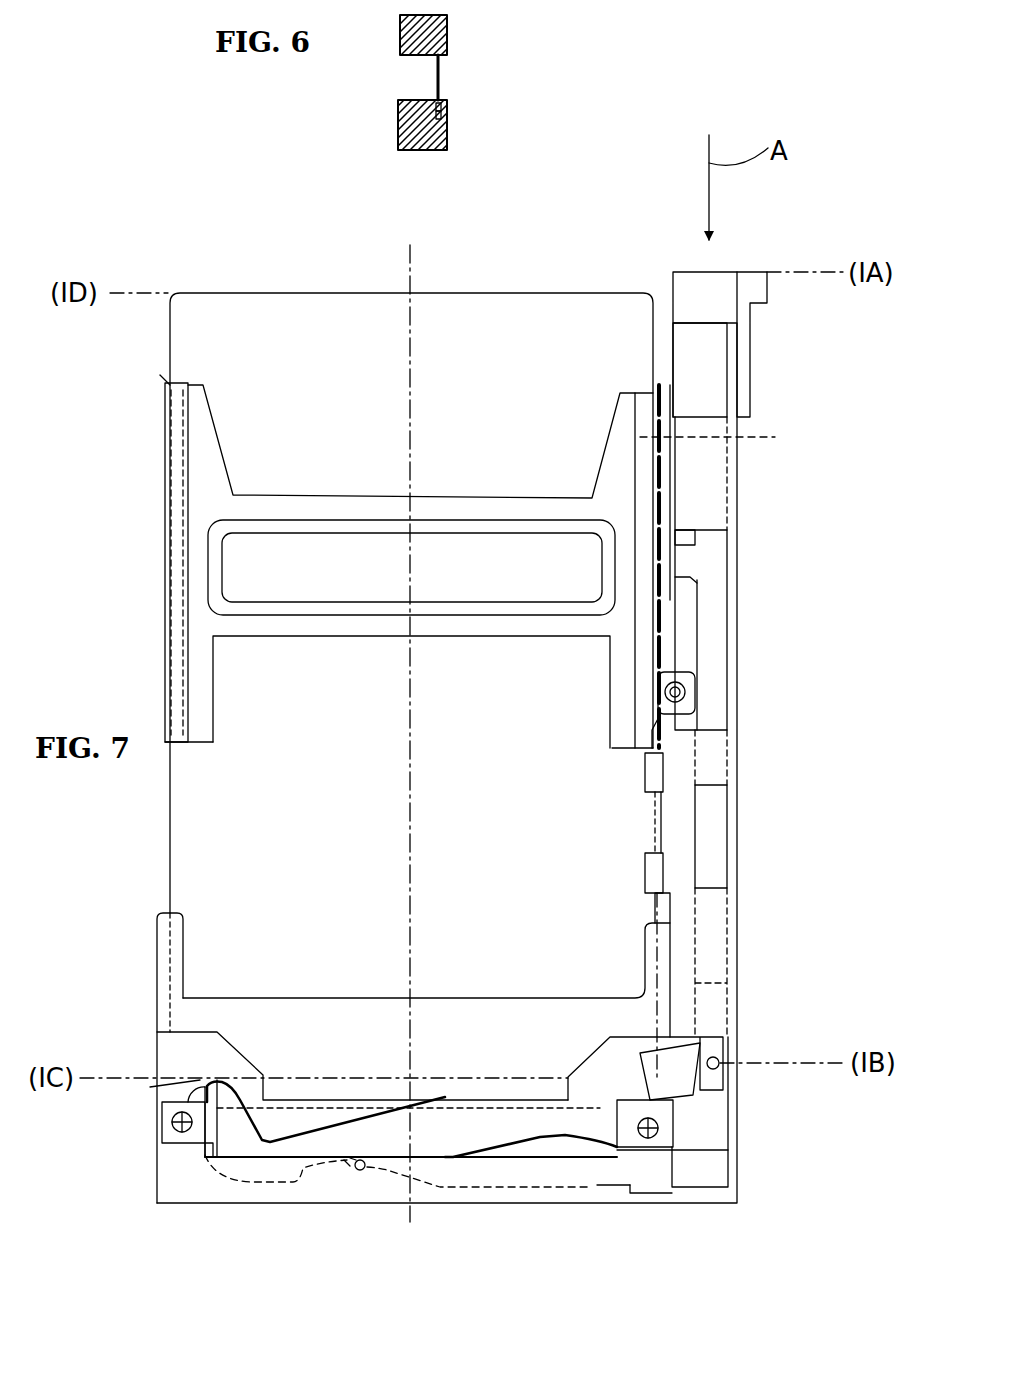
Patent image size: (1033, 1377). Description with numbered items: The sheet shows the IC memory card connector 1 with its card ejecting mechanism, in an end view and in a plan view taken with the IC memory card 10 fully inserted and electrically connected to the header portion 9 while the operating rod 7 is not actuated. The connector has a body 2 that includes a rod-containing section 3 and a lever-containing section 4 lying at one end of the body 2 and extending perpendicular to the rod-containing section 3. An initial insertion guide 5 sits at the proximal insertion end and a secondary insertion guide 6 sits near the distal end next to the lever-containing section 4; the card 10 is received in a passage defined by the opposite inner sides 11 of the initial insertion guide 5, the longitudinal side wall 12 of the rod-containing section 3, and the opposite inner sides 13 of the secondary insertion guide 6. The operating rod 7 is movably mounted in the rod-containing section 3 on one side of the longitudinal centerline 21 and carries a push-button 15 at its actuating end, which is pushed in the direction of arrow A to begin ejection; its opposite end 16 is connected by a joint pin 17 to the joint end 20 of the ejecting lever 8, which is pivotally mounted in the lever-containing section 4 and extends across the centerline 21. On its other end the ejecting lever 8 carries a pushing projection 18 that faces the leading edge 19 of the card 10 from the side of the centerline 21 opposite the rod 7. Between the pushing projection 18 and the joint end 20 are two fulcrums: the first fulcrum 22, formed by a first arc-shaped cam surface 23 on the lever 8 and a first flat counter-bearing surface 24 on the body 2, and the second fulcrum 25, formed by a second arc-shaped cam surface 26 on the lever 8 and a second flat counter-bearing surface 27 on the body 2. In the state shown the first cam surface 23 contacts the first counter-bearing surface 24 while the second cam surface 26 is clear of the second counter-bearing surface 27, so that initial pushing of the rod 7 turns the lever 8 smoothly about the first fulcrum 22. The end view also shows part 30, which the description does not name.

In FIG. 7, the IC memory card connector 1 is at (768, 688).
In FIG. 7, the body 2 is at (742, 893).
In FIG. 7, the rod-containing section 3 is at (702, 498).
In FIG. 6, the lever-containing section 4 is at (388, 102).
In FIG. 7, the lever-containing section 4 is at (517, 1158).
In FIG. 7, the initial insertion guide 5 is at (276, 505).
In FIG. 7, the secondary insertion guide 6 is at (318, 1042).
In FIG. 7, the operating rod 7 is at (690, 407).
In FIG. 6, the ejecting lever 8 is at (435, 78).
In FIG. 7, the ejecting lever 8 is at (362, 1170).
In FIG. 7, the header portion 9 is at (243, 1084).
In FIG. 7, the IC memory card 10 is at (532, 328).
In FIG. 7, the inner sides of initial insertion guide 11 is at (165, 560).
In FIG. 7, the longitudinal side wall 12 is at (655, 782).
In FIG. 7, the inner sides of secondary insertion guide 13 is at (672, 960).
In FIG. 7, the push-button 15 is at (700, 293).
In FIG. 7, the opposite end of operating rod 16 is at (704, 1090).
In FIG. 7, the joint pin 17 is at (719, 1062).
In FIG. 7, the pushing projection 18 is at (200, 1093).
In FIG. 7, the leading edge 19 is at (248, 1110).
In FIG. 7, the joint end 20 is at (700, 1100).
In FIG. 7, the longitudinal centerline 21 is at (415, 290).
In FIG. 7, the first fulcrum 22 is at (335, 1173).
In FIG. 6, the first arc-shaped cam surface 23 is at (440, 108).
In FIG. 7, the first arc-shaped cam surface 23 is at (354, 1161).
In FIG. 6, the first counter-bearing surface 24 is at (441, 118).
In FIG. 7, the first counter-bearing surface 24 is at (348, 1166).
In FIG. 7, the second fulcrum 25 is at (576, 1197).
In FIG. 7, the second arc-shaped cam surface 26 is at (618, 1148).
In FIG. 7, the second counter-bearing surface 27 is at (598, 1185).
In FIG. 7, the guide slot 30 is at (110, 440).